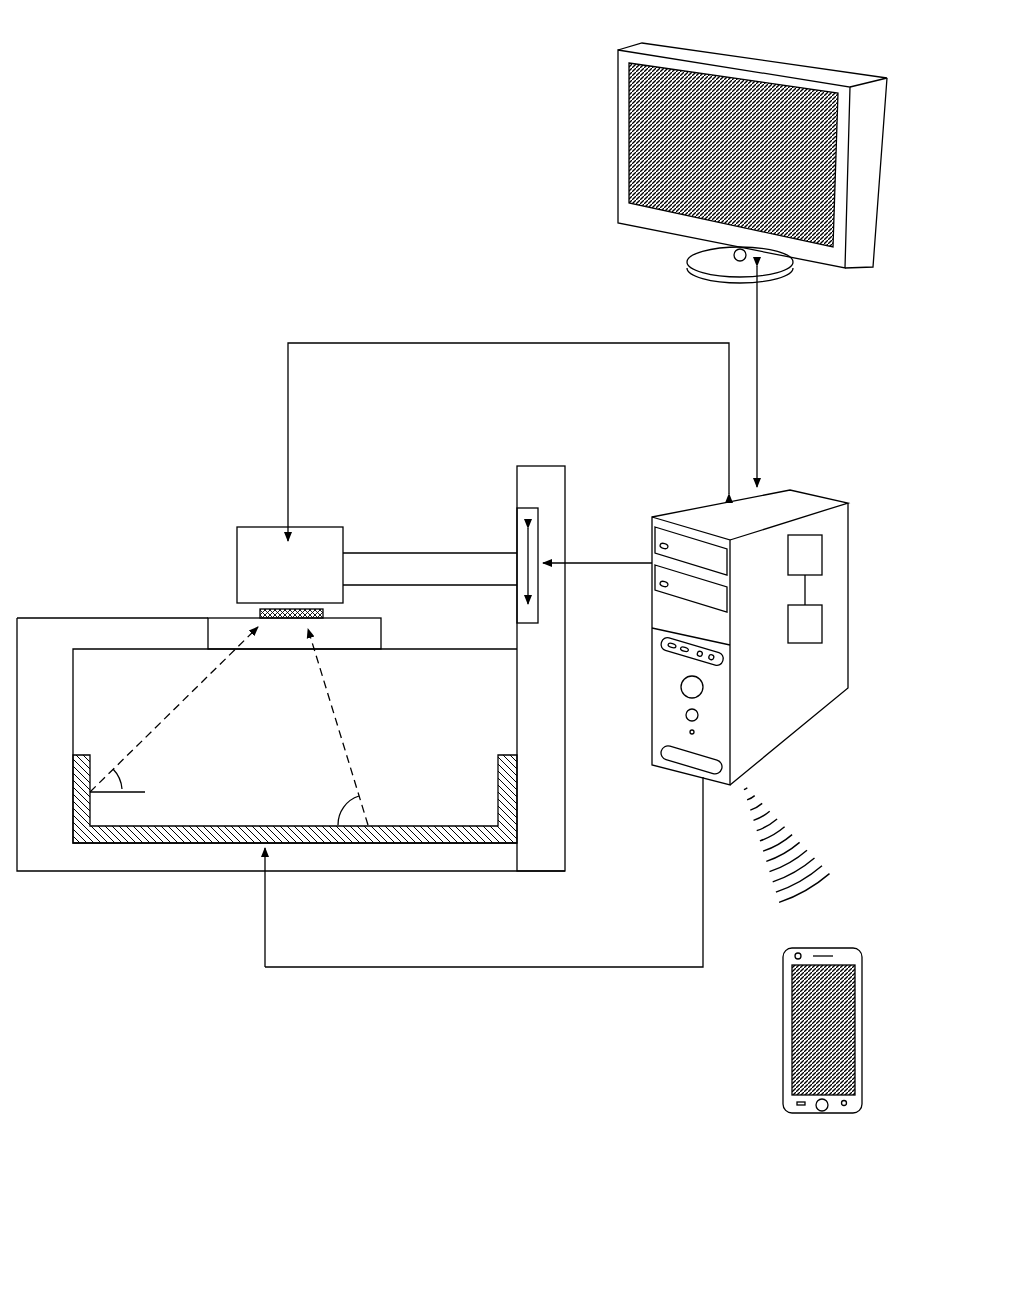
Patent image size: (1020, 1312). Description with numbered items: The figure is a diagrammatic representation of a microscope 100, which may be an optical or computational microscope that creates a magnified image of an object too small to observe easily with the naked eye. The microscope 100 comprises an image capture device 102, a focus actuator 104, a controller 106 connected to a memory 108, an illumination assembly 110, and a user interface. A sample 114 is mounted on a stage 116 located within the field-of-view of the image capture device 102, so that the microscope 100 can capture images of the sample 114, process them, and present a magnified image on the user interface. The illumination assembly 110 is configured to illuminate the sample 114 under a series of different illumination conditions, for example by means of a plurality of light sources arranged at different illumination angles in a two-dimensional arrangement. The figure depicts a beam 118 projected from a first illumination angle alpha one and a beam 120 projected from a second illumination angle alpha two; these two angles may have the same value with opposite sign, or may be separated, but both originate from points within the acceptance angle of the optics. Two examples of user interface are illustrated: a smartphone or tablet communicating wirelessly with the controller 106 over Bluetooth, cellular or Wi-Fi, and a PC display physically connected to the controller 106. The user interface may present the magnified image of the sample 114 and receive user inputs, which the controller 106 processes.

The microscope 100 is at (116, 399).
The image capture device 102 is at (265, 550).
The focus actuator 104 is at (535, 505).
The controller 106 is at (822, 555).
The memory 108 is at (822, 622).
The illumination assembly 110 is at (143, 830).
The sample 114 is at (253, 612).
The stage 116 is at (222, 618).
The beam 118 is at (345, 740).
The beam 120 is at (170, 710).